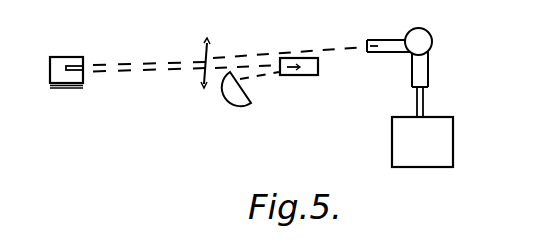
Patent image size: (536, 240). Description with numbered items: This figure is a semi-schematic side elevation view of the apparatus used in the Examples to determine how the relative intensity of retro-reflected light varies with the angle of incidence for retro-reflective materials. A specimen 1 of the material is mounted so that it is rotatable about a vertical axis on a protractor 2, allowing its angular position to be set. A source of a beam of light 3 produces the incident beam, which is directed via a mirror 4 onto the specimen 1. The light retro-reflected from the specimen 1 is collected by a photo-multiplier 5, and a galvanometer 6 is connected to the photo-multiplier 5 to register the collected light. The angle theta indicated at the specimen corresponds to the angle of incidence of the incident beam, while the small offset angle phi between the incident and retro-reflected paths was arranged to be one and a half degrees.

The specimen 1 is at (57, 70).
The protractor 2 is at (60, 89).
The source of a beam of light 3 is at (250, 105).
The mirror 4 is at (303, 75).
The photo-multiplier 5 is at (432, 43).
The galvanometer 6 is at (422, 142).